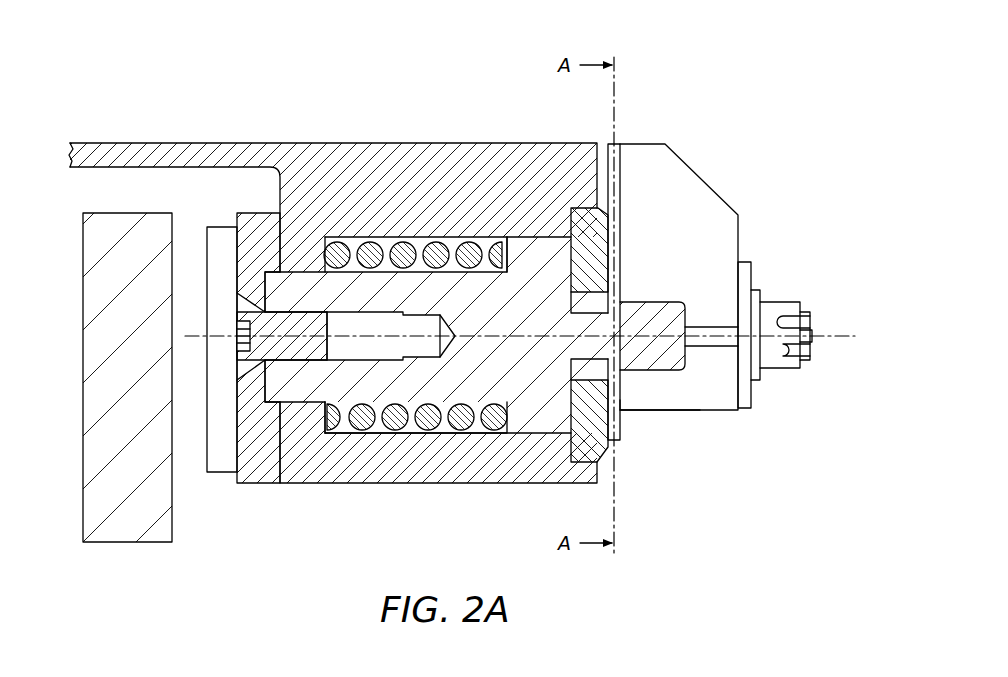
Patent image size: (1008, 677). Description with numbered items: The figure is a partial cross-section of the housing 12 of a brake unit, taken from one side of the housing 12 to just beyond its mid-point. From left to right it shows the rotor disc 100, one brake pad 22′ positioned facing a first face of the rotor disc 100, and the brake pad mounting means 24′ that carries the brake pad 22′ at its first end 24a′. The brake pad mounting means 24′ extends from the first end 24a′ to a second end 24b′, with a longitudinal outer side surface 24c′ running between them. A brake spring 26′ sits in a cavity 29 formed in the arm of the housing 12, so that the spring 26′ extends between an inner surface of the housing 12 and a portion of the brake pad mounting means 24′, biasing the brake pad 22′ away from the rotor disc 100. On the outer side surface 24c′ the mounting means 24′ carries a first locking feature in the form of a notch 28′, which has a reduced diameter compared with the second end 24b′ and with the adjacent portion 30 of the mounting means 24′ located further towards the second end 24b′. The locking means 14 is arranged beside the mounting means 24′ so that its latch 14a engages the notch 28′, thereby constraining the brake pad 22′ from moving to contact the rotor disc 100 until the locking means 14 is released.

The housing 12 is at (298, 143).
The cavity 29 is at (407, 237).
The first end 24a′ is at (272, 268).
The locking means 14 is at (622, 198).
The longitudinal outer side surface 24c′ is at (596, 301).
The second end 24b′ is at (670, 303).
The portion of the brake pad mounting means 30 is at (670, 328).
The latch 14a is at (622, 381).
The notch 28′ is at (621, 415).
The brake pad 22′ is at (222, 465).
The brake pad mounting means 24′ is at (353, 390).
The brake spring 26′ is at (427, 422).
The rotor disc 100 is at (141, 540).